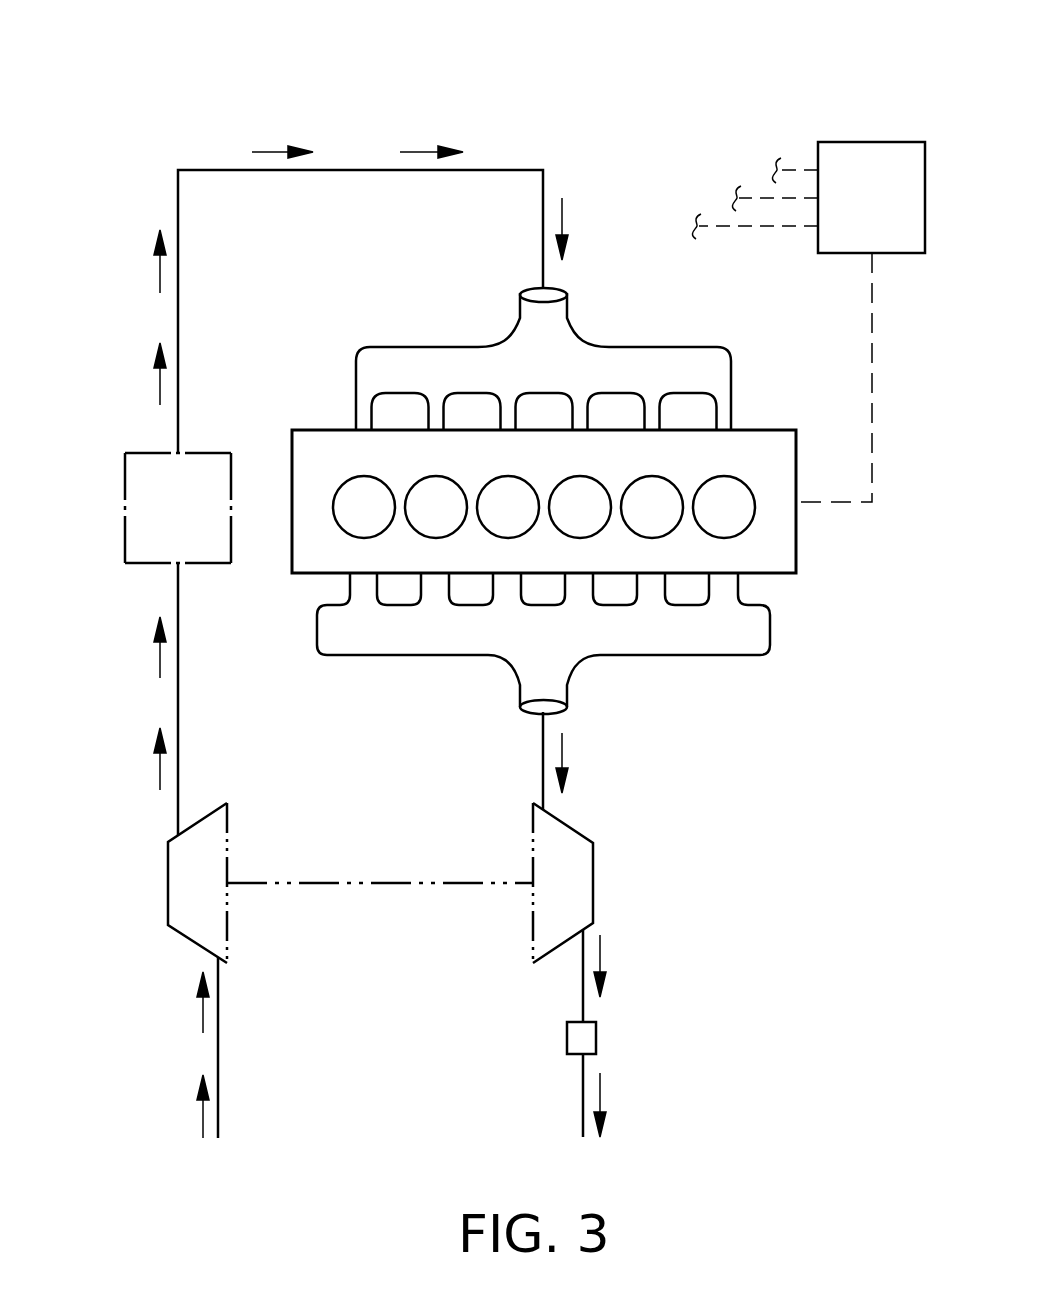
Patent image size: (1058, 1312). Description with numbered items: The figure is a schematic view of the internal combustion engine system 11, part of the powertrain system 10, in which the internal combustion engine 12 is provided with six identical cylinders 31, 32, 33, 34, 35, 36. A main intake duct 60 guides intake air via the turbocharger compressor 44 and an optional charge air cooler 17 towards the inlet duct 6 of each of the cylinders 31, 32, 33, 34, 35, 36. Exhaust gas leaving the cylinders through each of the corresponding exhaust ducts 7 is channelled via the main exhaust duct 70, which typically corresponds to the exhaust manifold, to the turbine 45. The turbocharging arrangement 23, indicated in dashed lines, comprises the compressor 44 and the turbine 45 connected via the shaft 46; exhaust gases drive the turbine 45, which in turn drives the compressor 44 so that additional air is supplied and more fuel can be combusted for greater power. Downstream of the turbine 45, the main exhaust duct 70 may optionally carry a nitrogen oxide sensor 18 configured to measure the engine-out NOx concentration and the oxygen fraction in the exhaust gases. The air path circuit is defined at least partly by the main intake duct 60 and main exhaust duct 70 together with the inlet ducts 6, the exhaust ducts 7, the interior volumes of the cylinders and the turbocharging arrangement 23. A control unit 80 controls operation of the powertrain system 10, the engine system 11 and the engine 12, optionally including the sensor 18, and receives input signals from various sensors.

The inlet duct 6 is at (731, 415).
The exhaust duct 7 is at (740, 583).
The powertrain system 10 is at (218, 50).
The internal combustion engine system 11 is at (218, 50).
The internal combustion engine 12 is at (318, 430).
The charge air cooler 17 is at (125, 475).
The nitrogen oxide sensor 18 is at (596, 1038).
The turbocharging arrangement 23 is at (364, 1015).
The cylinder 31 is at (364, 507).
The cylinder 32 is at (436, 507).
The cylinder 33 is at (508, 507).
The cylinder 34 is at (580, 507).
The cylinder 35 is at (652, 507).
The cylinder 36 is at (724, 507).
The turbocharger compressor 44 is at (168, 885).
The turbine 45 is at (593, 884).
The shaft 46 is at (377, 883).
The main intake duct 60 is at (362, 170).
The main exhaust duct 70 is at (568, 682).
The control unit 80 is at (873, 142).